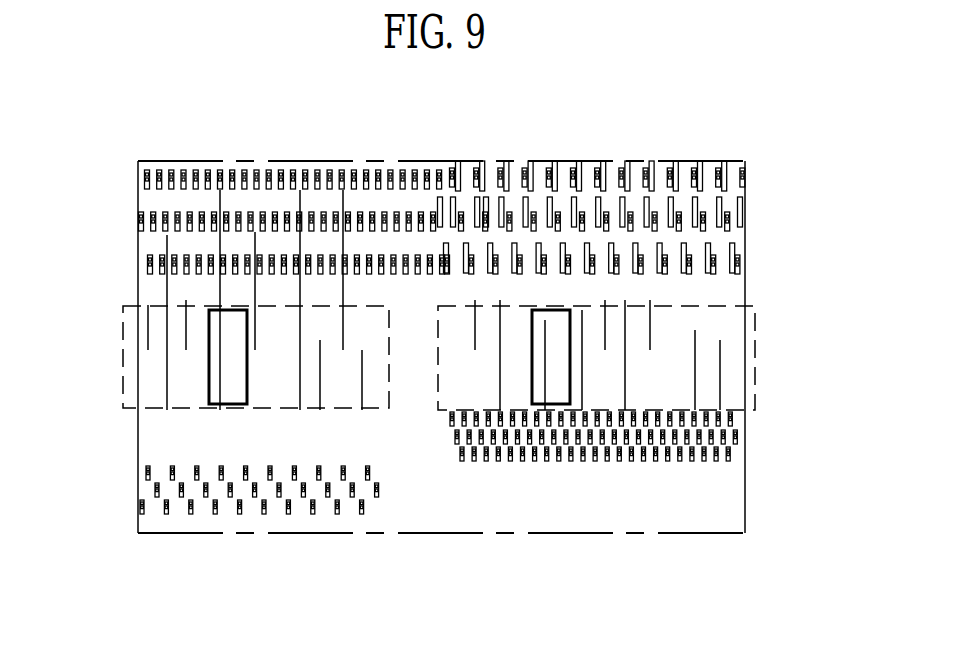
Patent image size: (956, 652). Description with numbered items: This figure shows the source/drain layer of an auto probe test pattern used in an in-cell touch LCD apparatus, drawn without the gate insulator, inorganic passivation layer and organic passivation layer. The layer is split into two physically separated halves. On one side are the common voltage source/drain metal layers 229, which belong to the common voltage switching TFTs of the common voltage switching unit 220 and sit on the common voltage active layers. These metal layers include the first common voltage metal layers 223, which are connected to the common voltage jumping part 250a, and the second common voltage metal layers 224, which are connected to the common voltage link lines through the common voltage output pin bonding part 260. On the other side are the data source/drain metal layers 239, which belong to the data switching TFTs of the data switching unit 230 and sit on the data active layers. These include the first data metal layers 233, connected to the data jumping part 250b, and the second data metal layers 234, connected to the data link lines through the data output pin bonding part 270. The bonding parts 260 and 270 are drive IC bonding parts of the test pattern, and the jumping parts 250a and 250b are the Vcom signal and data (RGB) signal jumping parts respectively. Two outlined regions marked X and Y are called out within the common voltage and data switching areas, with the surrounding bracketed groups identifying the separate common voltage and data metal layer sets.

The common voltage switching unit 220 is at (388, 352).
The first common voltage metal layers 223 is at (155, 434).
The second common voltage metal layers 224 is at (155, 283).
The common voltage source/drain metal layers 229 is at (78, 277).
The data switching unit 230 is at (439, 356).
The first data metal layers 233 is at (738, 428).
The second data metal layers 234 is at (737, 286).
The data source/drain metal layers 239 is at (808, 277).
The common voltage jumping part 250a is at (256, 503).
The data jumping part 250b is at (612, 458).
The common voltage output pin bonding part 260 is at (268, 194).
The data output pin bonding part 270 is at (637, 197).
The region X is at (207, 378).
The region Y is at (525, 379).